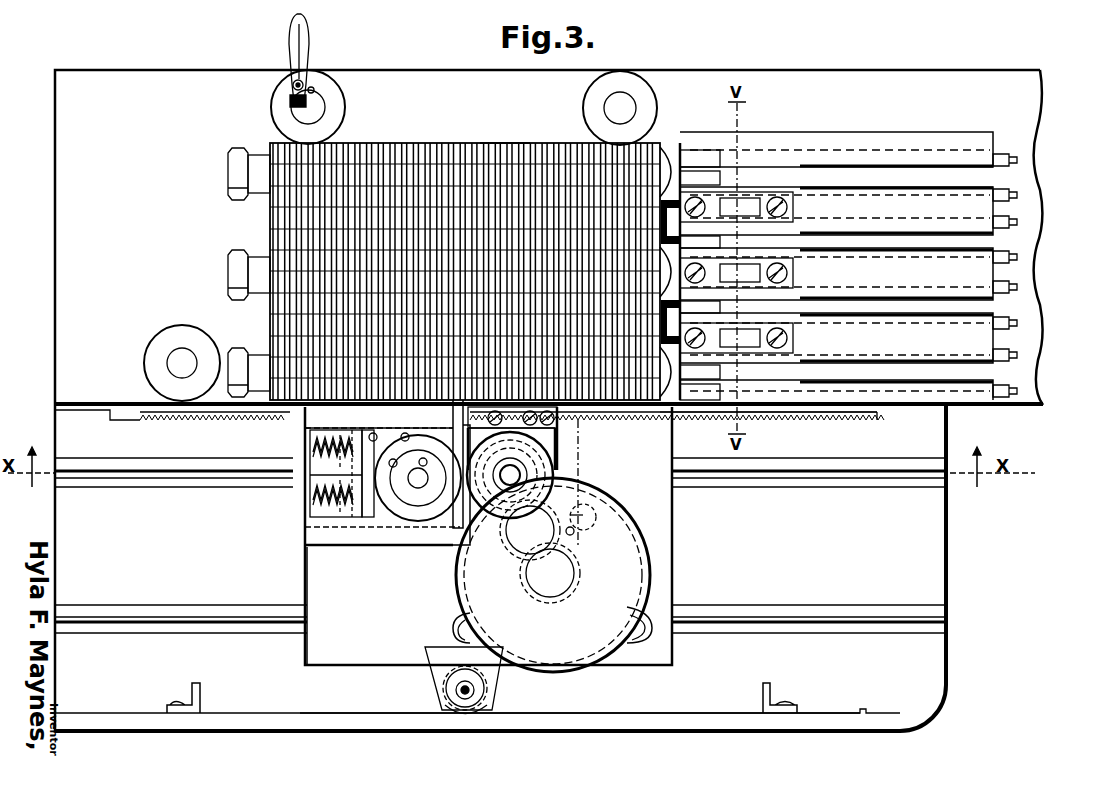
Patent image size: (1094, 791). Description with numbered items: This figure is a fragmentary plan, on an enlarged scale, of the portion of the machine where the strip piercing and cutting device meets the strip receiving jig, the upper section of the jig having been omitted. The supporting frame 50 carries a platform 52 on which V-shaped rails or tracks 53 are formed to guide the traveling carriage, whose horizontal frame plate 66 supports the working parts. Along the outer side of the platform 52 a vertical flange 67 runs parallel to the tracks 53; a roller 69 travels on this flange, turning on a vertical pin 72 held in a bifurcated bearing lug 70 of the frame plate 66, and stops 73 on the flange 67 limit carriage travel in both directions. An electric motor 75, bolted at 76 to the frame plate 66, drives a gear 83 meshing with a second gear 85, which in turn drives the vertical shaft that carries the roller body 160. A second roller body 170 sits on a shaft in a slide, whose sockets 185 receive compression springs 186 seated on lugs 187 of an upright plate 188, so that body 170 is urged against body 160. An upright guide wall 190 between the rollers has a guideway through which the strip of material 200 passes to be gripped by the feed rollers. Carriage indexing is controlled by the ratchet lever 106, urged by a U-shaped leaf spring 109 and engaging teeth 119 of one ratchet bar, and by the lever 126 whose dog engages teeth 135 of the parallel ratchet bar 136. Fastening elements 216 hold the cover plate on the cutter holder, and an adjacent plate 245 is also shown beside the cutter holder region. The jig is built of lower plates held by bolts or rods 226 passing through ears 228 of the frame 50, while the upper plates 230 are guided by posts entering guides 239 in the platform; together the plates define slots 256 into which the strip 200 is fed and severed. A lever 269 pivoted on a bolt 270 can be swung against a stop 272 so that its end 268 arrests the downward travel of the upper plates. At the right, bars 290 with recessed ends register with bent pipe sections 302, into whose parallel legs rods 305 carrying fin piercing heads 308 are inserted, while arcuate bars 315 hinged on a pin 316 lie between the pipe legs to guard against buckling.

The supporting frame 50 is at (55, 360).
The platform 52 is at (62, 426).
The rails or tracks 53 is at (72, 605).
The frame plate 66 is at (313, 583).
The vertical flange 67 is at (537, 723).
The roller 69 is at (447, 705).
The bifurcated bearing lug 70 is at (487, 705).
The vertical pin 72 is at (462, 692).
The stops 73 is at (203, 712).
The electric motor 75 is at (652, 568).
The bolts 76 is at (462, 625).
The gear 83 is at (582, 573).
The second gear 85 is at (562, 550).
The ratchet lever 106 is at (578, 483).
The U-shaped leaf spring 109 is at (598, 514).
The teeth 119 is at (816, 420).
The lever 126 is at (432, 490).
The teeth 135 is at (198, 440).
The ratchet bar 136 is at (158, 440).
The roller body 160 is at (490, 520).
The roller body 170 is at (398, 500).
The sockets 185 is at (358, 518).
The compression springs 186 is at (305, 510).
The lugs 187 is at (310, 450).
The plate 188 is at (300, 500).
The guide wall 190 is at (458, 560).
The strip of material 200 is at (467, 640).
The fastening elements 216 is at (555, 415).
The bolts or rods 226 is at (238, 345).
The ears 228 is at (258, 245).
The upper plates 230 is at (520, 142).
The guides 239 is at (324, 118).
The plate 245 is at (560, 425).
The slots 256 is at (452, 142).
The end of lever 268 is at (290, 100).
The lever 269 is at (290, 42).
The bolt 270 is at (304, 82).
The stop 272 is at (318, 88).
The bar 290 is at (855, 132).
The pipe section 302 is at (920, 195).
The rods 305 is at (1017, 222).
The fin piercing heads 308 is at (705, 152).
The arcuate bars 315 is at (806, 190).
The hinge pin 316 is at (512, 431).